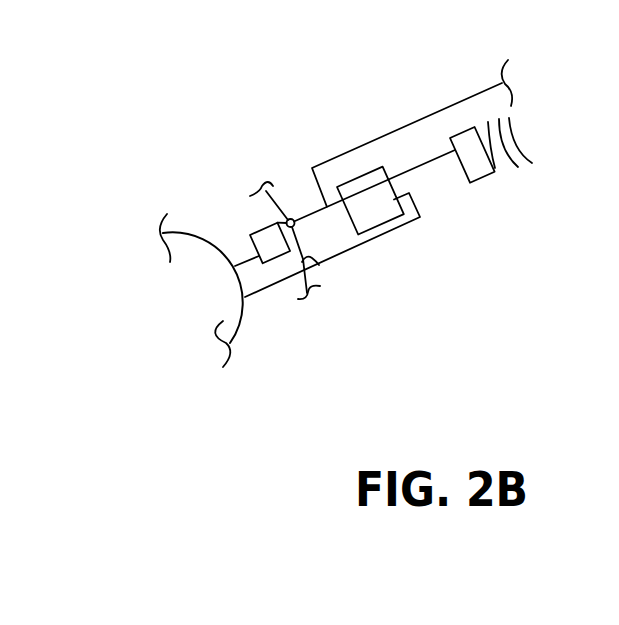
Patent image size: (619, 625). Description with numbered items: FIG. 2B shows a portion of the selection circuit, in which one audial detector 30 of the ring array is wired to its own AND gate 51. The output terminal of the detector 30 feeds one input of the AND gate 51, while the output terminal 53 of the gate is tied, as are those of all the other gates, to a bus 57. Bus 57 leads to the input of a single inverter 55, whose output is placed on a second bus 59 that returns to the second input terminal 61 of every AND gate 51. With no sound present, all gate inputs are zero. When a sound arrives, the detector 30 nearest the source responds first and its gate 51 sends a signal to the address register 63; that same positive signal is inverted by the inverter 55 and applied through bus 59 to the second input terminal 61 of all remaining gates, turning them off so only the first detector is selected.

The audial detector 30 is at (484, 174).
The AND gate 51 is at (368, 217).
The output terminal 53 is at (320, 212).
The inverter 55 is at (262, 229).
The bus 57 is at (278, 203).
The bus 59 is at (232, 342).
The second input terminal 61 is at (406, 199).
The address register 63 is at (527, 137).